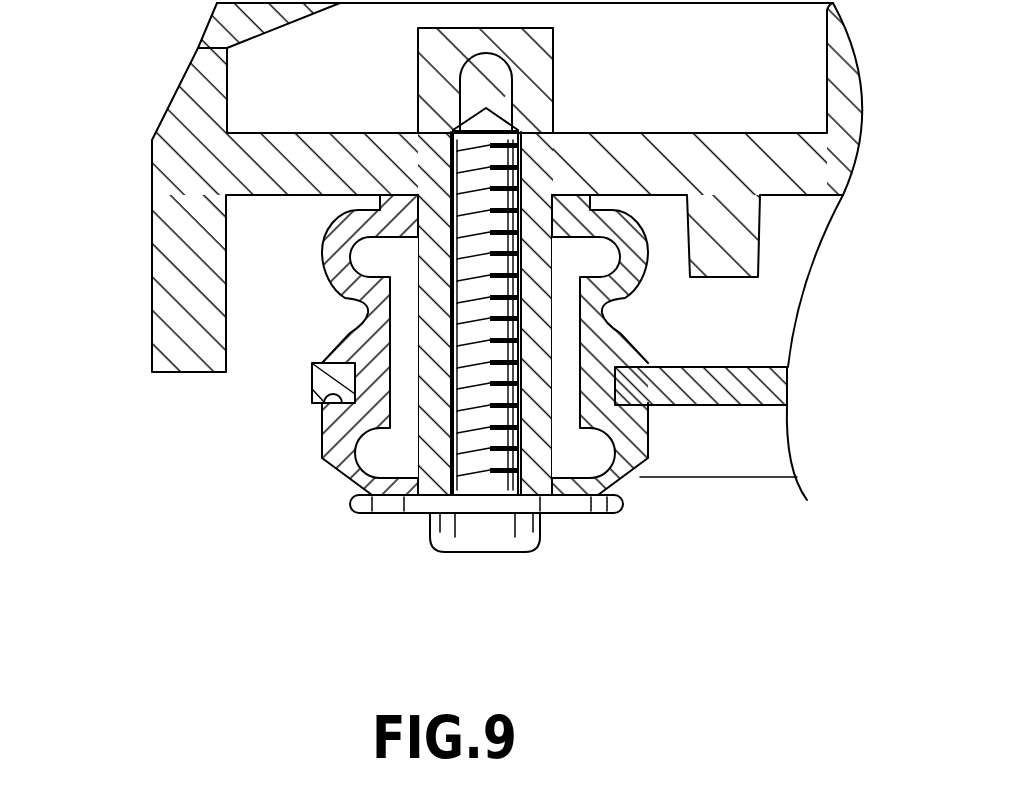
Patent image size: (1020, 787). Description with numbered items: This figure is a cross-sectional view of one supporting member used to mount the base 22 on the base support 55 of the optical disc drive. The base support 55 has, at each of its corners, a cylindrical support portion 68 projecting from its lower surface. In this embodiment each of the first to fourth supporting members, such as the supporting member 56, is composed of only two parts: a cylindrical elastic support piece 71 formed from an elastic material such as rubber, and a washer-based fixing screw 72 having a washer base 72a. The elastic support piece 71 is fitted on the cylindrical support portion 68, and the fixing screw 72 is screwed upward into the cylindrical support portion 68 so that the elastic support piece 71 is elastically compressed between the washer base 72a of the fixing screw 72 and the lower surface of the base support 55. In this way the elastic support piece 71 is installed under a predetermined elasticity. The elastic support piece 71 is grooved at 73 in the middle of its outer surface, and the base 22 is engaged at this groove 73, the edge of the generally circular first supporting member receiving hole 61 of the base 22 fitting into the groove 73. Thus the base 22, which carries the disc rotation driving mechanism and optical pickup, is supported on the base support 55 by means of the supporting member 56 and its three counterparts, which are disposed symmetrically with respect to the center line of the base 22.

The base support 55 is at (311, 137).
The base 22 is at (740, 392).
The first supporting member receiving hole 61 is at (312, 380).
The cylindrical elastic support piece 71 is at (337, 334).
The groove 73 is at (316, 397).
The cylindrical support portion 68 is at (542, 430).
The fixing screw 72 is at (448, 550).
The washer base 72a is at (363, 514).
The first supporting member 56 is at (623, 511).